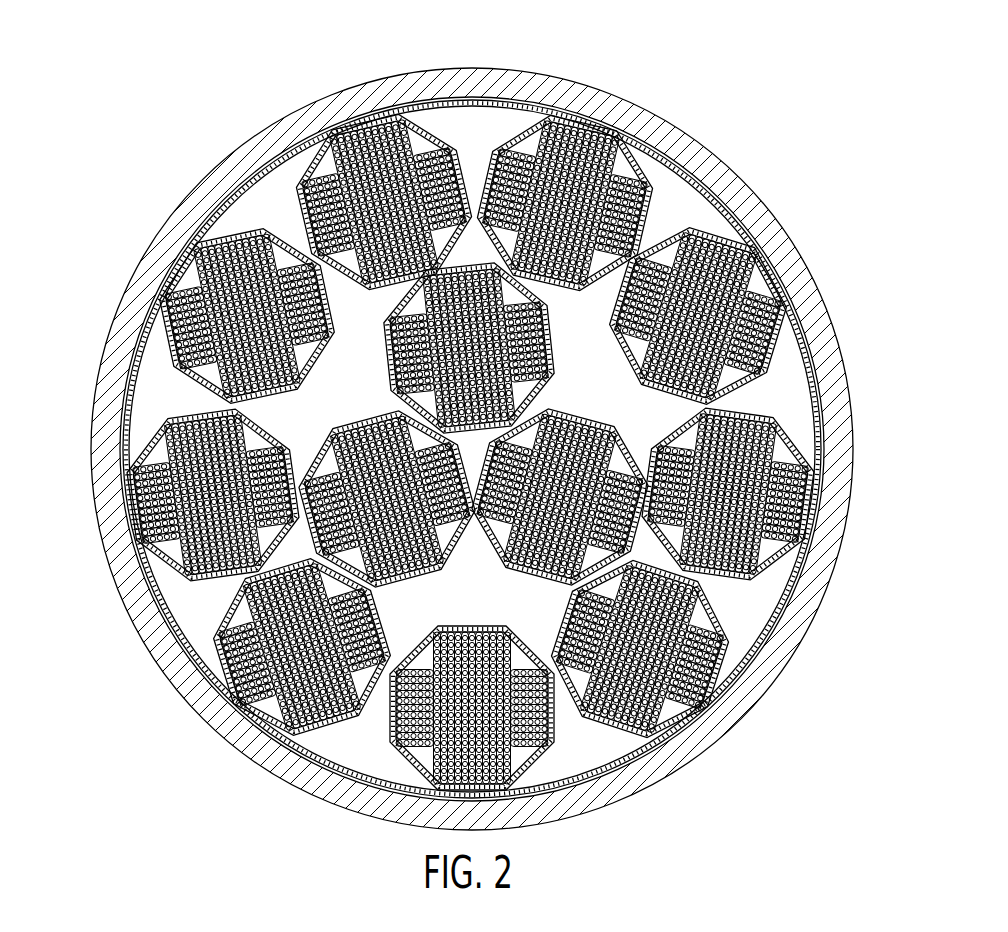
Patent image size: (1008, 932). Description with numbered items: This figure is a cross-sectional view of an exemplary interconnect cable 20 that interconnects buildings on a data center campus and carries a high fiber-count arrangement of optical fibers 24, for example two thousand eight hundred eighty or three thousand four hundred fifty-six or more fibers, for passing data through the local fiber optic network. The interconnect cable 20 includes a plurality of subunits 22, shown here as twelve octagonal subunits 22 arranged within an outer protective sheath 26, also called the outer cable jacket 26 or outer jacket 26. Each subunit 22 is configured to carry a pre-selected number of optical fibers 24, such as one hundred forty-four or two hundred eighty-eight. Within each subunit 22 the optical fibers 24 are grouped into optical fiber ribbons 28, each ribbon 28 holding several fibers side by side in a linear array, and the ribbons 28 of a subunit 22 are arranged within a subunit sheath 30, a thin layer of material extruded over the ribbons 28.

The interconnect cable 20 is at (216, 80).
The subunit 22 is at (638, 163).
The optical fiber 24 is at (497, 140).
The outer protective sheath 26 is at (160, 220).
The optical fiber ribbon 28 is at (566, 265).
The subunit sheath 30 is at (635, 220).